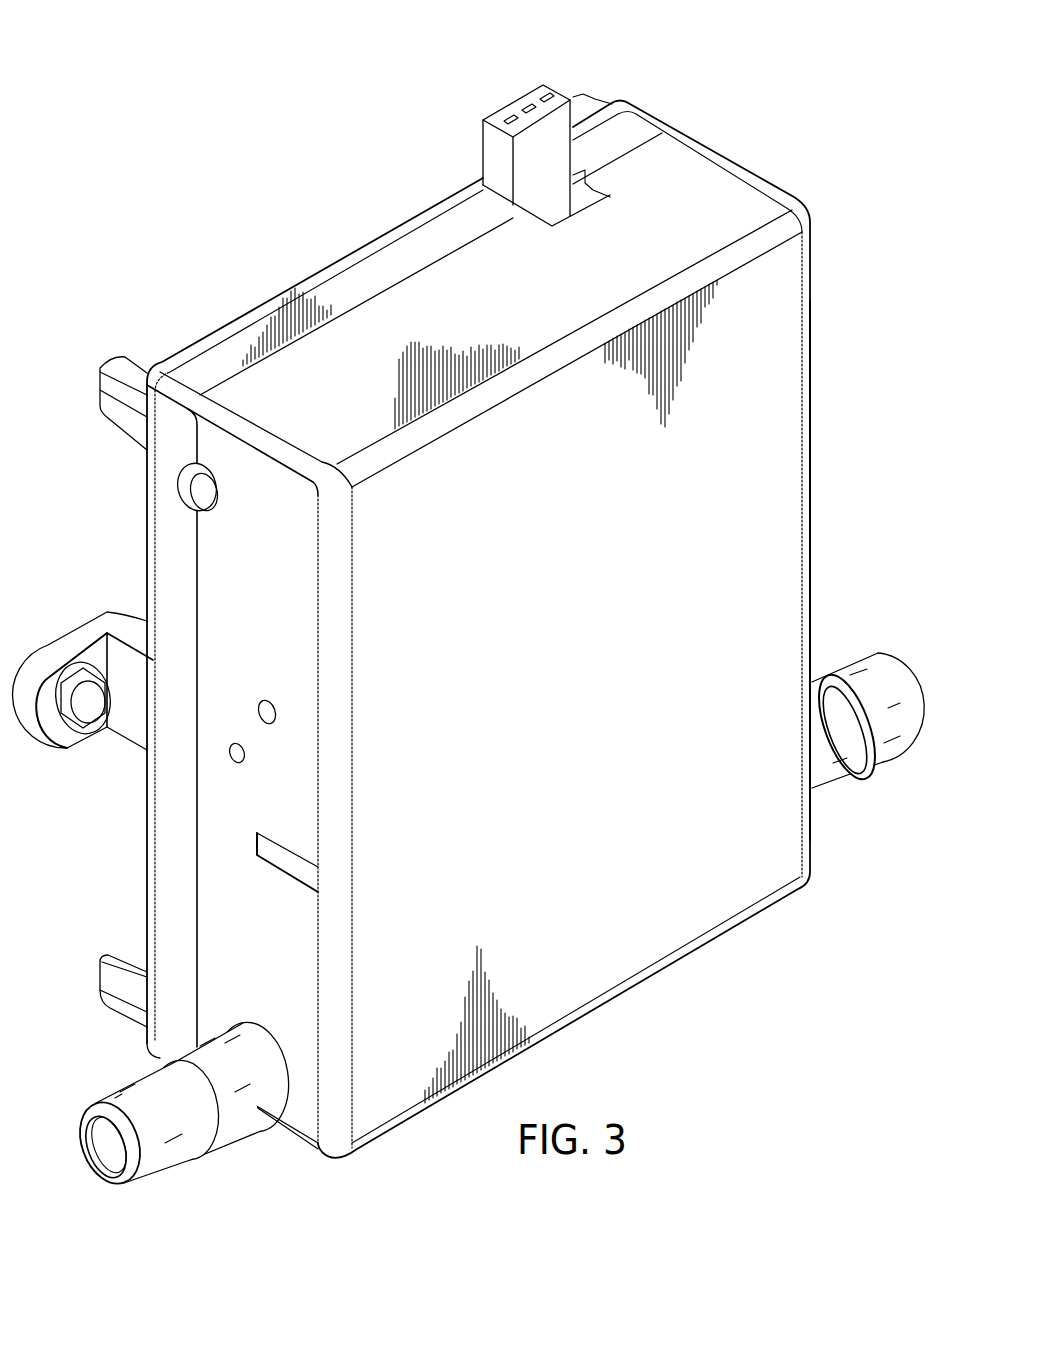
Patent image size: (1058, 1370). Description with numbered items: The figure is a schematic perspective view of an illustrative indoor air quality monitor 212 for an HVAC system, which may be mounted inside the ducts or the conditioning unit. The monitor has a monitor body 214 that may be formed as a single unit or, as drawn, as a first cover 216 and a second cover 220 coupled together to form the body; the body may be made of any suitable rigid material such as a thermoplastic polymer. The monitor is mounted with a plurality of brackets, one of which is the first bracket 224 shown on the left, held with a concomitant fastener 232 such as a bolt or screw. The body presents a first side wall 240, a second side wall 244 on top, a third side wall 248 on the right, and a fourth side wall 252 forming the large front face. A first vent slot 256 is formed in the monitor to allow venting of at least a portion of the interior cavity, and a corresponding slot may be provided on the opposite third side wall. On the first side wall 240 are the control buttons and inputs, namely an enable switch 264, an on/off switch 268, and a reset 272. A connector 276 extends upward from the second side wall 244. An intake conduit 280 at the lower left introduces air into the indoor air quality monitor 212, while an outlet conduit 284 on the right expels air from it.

The indoor air quality monitor 212 is at (268, 74).
The monitor body 214 is at (735, 80).
The first cover 216 is at (741, 156).
The second cover 220 is at (686, 82).
The first bracket 224 is at (68, 632).
The fastener 232 is at (97, 708).
The first side wall 240 is at (165, 555).
The second side wall 244 is at (343, 290).
The third side wall 248 is at (812, 514).
The fourth side wall 252 is at (597, 1012).
The first vent slot 256 is at (294, 858).
The enable switch 264 is at (177, 490).
The on/off switch 268 is at (265, 702).
The reset 272 is at (237, 764).
The connector 276 is at (527, 113).
The intake conduit 280 is at (165, 1174).
The outlet conduit 284 is at (891, 752).